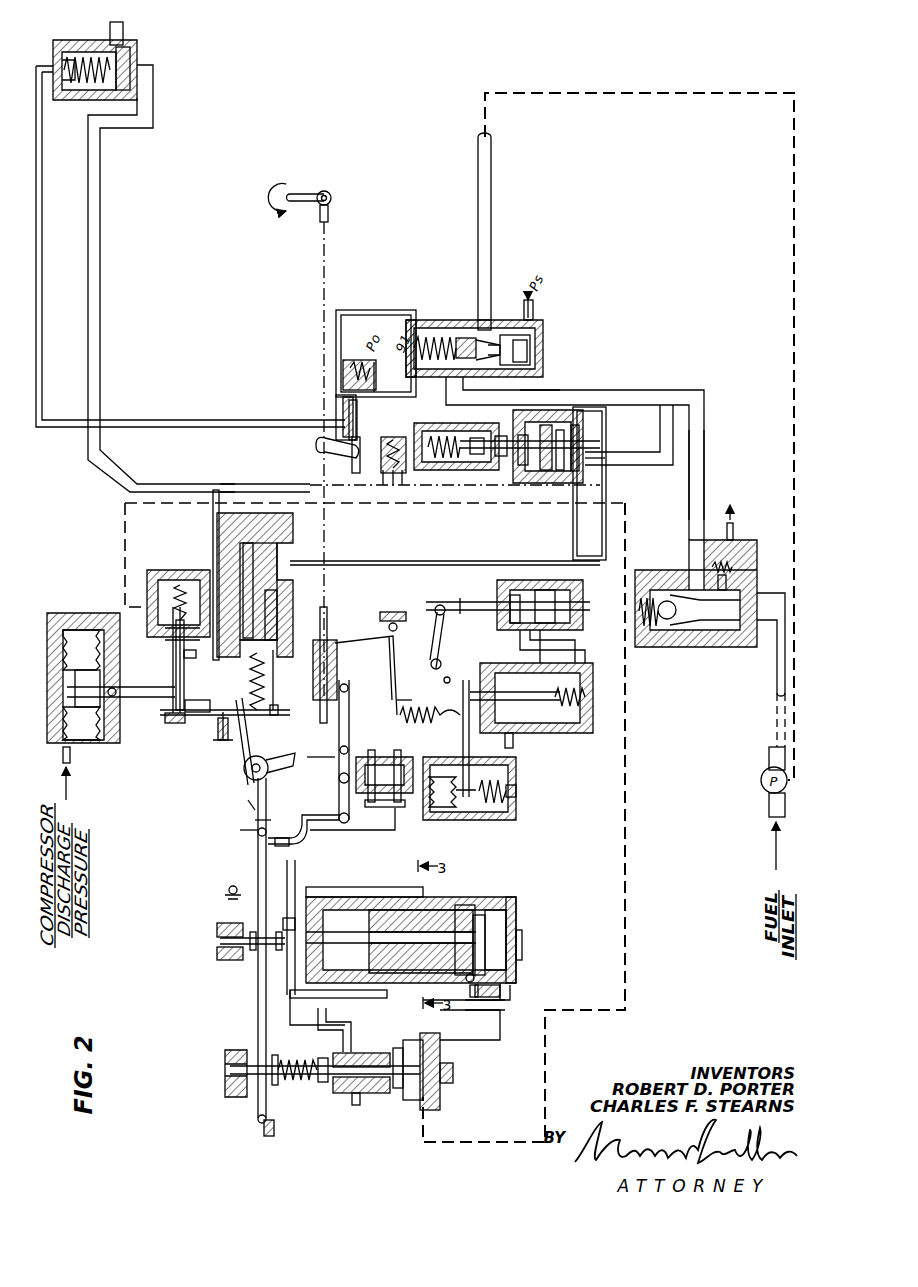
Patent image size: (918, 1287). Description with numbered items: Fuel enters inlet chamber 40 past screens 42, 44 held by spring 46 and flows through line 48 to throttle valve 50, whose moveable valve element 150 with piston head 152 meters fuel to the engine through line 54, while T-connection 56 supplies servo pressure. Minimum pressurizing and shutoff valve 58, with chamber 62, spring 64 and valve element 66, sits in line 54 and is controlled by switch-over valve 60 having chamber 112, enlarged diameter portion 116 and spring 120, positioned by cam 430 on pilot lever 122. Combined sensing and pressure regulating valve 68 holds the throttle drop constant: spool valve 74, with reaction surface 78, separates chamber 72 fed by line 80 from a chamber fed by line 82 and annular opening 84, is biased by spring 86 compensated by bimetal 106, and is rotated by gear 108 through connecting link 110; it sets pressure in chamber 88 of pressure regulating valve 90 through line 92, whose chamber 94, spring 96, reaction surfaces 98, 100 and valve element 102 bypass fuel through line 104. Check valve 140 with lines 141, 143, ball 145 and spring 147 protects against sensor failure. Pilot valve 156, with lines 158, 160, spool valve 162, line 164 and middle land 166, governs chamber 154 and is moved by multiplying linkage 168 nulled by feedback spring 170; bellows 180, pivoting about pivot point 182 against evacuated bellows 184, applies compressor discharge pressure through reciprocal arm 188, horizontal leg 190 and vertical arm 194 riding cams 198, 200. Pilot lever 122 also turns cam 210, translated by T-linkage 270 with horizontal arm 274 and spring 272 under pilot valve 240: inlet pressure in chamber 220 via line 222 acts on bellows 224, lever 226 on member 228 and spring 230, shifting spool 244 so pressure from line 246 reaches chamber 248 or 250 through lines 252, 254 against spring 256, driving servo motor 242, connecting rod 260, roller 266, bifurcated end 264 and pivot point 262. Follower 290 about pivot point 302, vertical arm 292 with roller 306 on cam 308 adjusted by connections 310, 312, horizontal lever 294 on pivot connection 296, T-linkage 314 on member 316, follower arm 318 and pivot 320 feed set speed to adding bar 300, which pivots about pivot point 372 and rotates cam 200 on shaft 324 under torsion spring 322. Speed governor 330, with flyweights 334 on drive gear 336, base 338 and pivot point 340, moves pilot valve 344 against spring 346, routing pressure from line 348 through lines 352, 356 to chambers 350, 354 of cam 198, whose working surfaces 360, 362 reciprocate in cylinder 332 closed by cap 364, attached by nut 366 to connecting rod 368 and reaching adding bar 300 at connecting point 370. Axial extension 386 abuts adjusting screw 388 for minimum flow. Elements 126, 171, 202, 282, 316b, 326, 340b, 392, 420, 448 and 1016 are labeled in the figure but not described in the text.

The fuel conduit 40 is at (750, 632).
The valve spring 42 is at (740, 580).
The check valve housing 44 is at (672, 595).
The ball valve 46 is at (640, 605).
The fuel line 48 is at (704, 440).
The conduit 50 is at (238, 565).
The conduit 54 is at (102, 250).
The pressure tap 56 is at (735, 538).
The servo housing 58 is at (62, 120).
The metering valve 60 is at (338, 402).
The piston 62 is at (70, 88).
The chamber 64 is at (66, 62).
The spring 66 is at (84, 98).
The valve sleeve 68 is at (540, 470).
The conduit 72 is at (608, 465).
The conduit 74 is at (560, 402).
The conduit 78 is at (600, 452).
The chamber 80 is at (585, 483).
The conduit 82 is at (188, 484).
The valve housing 84 is at (505, 480).
The valve housing 86 is at (440, 425).
The housing wall 88 is at (410, 328).
The pressure regulating valve 90 is at (428, 312).
The conduit 92 is at (372, 310).
The valve member 94 is at (517, 330).
The spring 96 is at (426, 335).
The plug 98 is at (466, 338).
The valve seat 100 is at (505, 343).
The port 102 is at (484, 322).
The conduit 104 is at (478, 255).
The spring 106 is at (432, 462).
The valve land 108 is at (575, 485).
The conduit 110 is at (555, 390).
The pin 112 is at (350, 400).
The valve body 116 is at (340, 385).
The valve 120 is at (344, 358).
The control lever 122 is at (310, 192).
The conduit 126 is at (137, 420).
The land 140 is at (393, 480).
The land 141 is at (402, 480).
The spring 143 is at (390, 369).
The spring 145 is at (390, 434).
The land 147 is at (383, 480).
The piston 150 is at (262, 605).
The chamber 152 is at (268, 513).
The servo housing 154 is at (230, 515).
The valve housing 156 is at (146, 600).
The lever 158 is at (173, 705).
The spring 160 is at (170, 615).
The valve stem 162 is at (175, 640).
The valve 164 is at (198, 668).
The stem 166 is at (159, 665).
The lever 168 is at (184, 741).
The spring 170 is at (245, 680).
The pivot 171 is at (139, 728).
The bellows 180 is at (110, 745).
The rod 182 is at (130, 700).
The bellows housing 184 is at (92, 613).
The link 188 is at (210, 718).
The lever 190 is at (238, 740).
The piston rod 194 is at (382, 910).
The piston 198 is at (478, 912).
The link 200 is at (304, 789).
The pivot 202 is at (255, 830).
The lever 210 is at (320, 645).
The housing 220 is at (520, 820).
The spring 222 is at (508, 802).
The bellows 224 is at (450, 808).
The rod 226 is at (464, 760).
The spring 228 is at (440, 715).
The stop 230 is at (502, 797).
The valve housing 240 is at (595, 722).
The valve land 242 is at (560, 480).
The rod 244 is at (490, 612).
The port 246 is at (515, 738).
The piston housing 248 is at (585, 598).
The land 250 is at (520, 465).
The conduit 252 is at (585, 654).
The piston 254 is at (505, 618).
The spring 256 is at (593, 697).
The land 260 is at (466, 475).
The conduit 262 is at (473, 660).
The lever 264 is at (437, 615).
The land 266 is at (450, 475).
The cam 270 is at (340, 640).
The spring 272 is at (410, 674).
The lever 274 is at (388, 648).
The pivot 282 is at (241, 766).
The lever 290 is at (346, 705).
The pivot 292 is at (326, 777).
The lever 294 is at (285, 925).
The stop 296 is at (296, 927).
The lever 300 is at (262, 862).
The link 302 is at (323, 751).
The link 306 is at (388, 808).
The link 308 is at (364, 827).
The pin 310 is at (369, 752).
The guide housing 312 is at (393, 760).
The pin 314 is at (466, 1024).
The pin 316 is at (371, 755).
The pin 316b is at (488, 999).
The lever 318 is at (380, 994).
The stop 320 is at (281, 1047).
The pivot hub 322 is at (270, 775).
The pin 324 is at (240, 731).
The bearing 326 is at (325, 1065).
The gear 330 is at (460, 1085).
The housing wall 332 is at (510, 897).
The nut 334 is at (405, 1090).
The link 336 is at (470, 1043).
The wall 338 is at (440, 1100).
The pivot 340 is at (239, 853).
The shaft 340b is at (420, 1100).
The adjusting screw 344 is at (335, 1085).
The spring 346 is at (293, 1087).
The nut 348 is at (355, 1095).
The servo housing 350 is at (338, 897).
The conduit 352 is at (340, 1040).
The port 354 is at (516, 920).
The conduit 356 is at (505, 1005).
The chamber 360 is at (495, 910).
The piston 362 is at (370, 910).
The wall 364 is at (518, 940).
The pivot 366 is at (485, 959).
The lever 368 is at (330, 887).
The stop 370 is at (250, 972).
The bracket 372 is at (258, 1120).
The rod 386 is at (295, 679).
The stop 388 is at (288, 686).
The block 392 is at (500, 990).
The rod 420 is at (462, 905).
The lever 430 is at (320, 455).
The pivot 448 is at (255, 990).
The valve stem 1016 is at (470, 470).